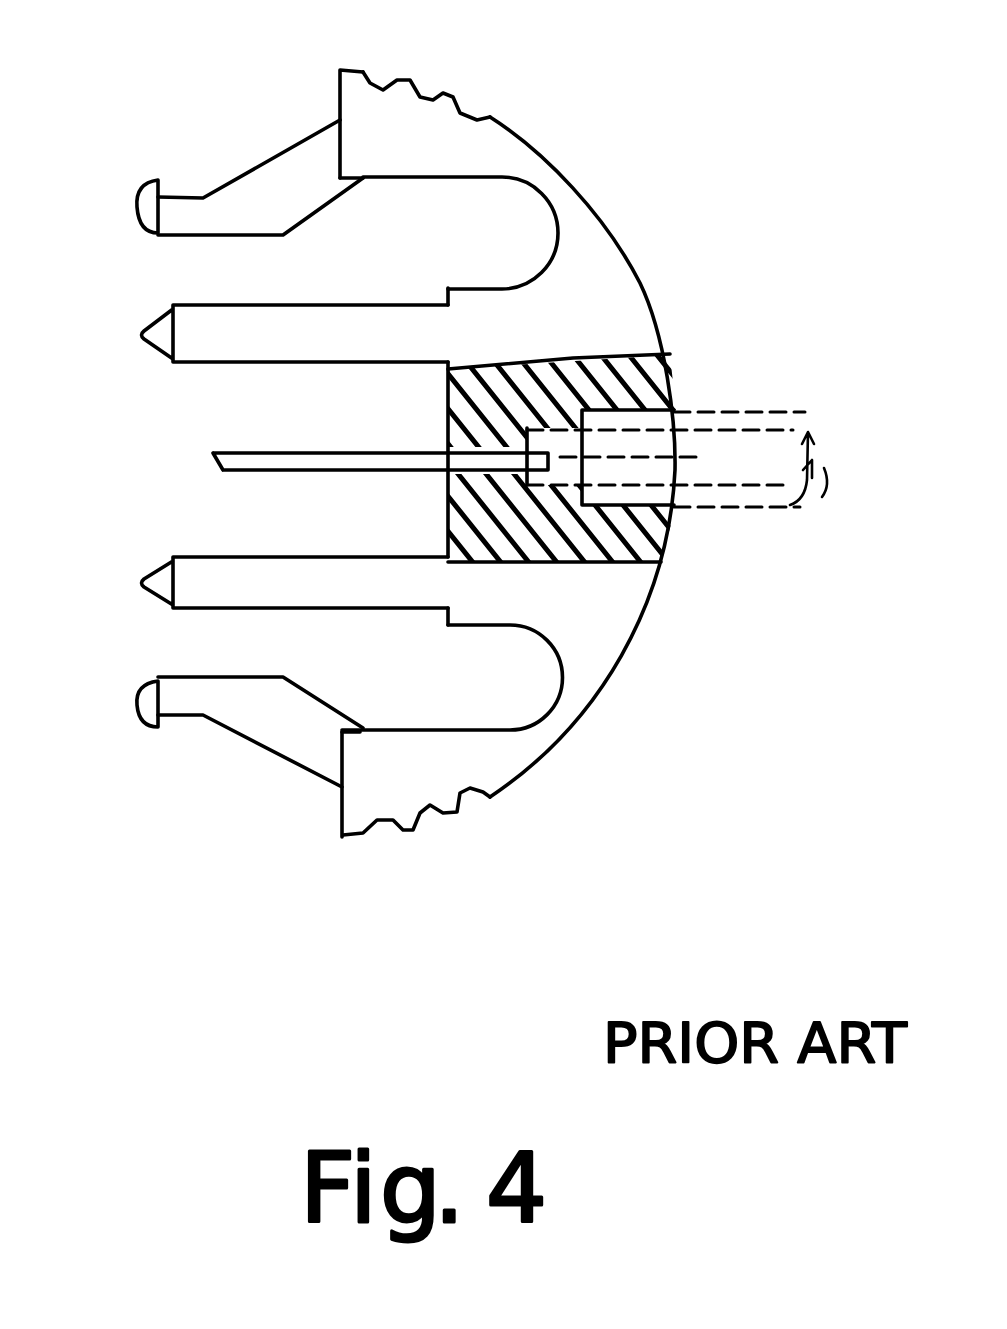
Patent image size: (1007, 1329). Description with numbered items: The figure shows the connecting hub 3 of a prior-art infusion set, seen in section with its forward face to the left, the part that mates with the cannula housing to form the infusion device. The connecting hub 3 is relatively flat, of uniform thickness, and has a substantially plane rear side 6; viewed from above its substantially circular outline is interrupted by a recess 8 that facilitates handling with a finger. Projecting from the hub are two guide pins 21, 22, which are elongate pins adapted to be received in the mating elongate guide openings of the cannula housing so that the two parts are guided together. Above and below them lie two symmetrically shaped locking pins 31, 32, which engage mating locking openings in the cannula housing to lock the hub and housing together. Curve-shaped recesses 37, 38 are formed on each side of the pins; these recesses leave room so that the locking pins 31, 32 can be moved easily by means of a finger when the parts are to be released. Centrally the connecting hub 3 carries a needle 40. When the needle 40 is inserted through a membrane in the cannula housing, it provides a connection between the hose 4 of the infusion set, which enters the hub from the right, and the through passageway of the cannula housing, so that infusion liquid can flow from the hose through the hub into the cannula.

The connecting hub 3 is at (610, 297).
The hose 4 is at (800, 413).
The rear side 6 is at (427, 100).
The recess 8 is at (431, 806).
The guide pin 21 is at (200, 337).
The guide pin 22 is at (203, 593).
The locking pin 31 is at (248, 200).
The locking pin 32 is at (260, 722).
The curve-shaped recess 37 is at (510, 227).
The curve-shaped recess 38 is at (527, 687).
The needle 40 is at (262, 470).